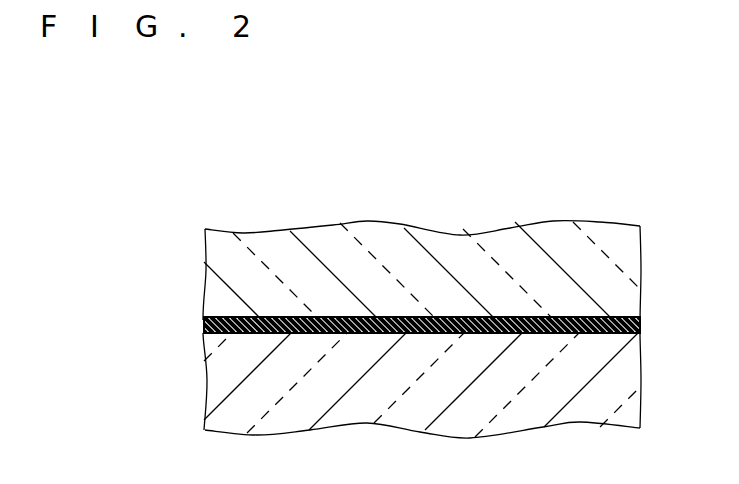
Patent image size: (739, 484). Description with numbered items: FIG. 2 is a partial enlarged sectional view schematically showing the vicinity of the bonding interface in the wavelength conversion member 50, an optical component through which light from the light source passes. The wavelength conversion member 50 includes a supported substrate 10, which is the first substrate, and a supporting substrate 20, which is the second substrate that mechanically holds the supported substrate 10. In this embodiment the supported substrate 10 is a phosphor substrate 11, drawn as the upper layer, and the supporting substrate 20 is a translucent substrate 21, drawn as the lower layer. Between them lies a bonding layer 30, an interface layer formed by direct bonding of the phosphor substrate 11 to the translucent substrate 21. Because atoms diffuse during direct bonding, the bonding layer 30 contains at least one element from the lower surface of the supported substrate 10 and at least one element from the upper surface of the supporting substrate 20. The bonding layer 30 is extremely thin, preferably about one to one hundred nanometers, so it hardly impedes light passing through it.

The wavelength conversion member 50 is at (224, 175).
The supported substrate 10 is at (422, 273).
The phosphor substrate 11 is at (227, 280).
The supporting substrate 20 is at (421, 385).
The translucent substrate 21 is at (227, 392).
The bonding layer 30 is at (641, 326).